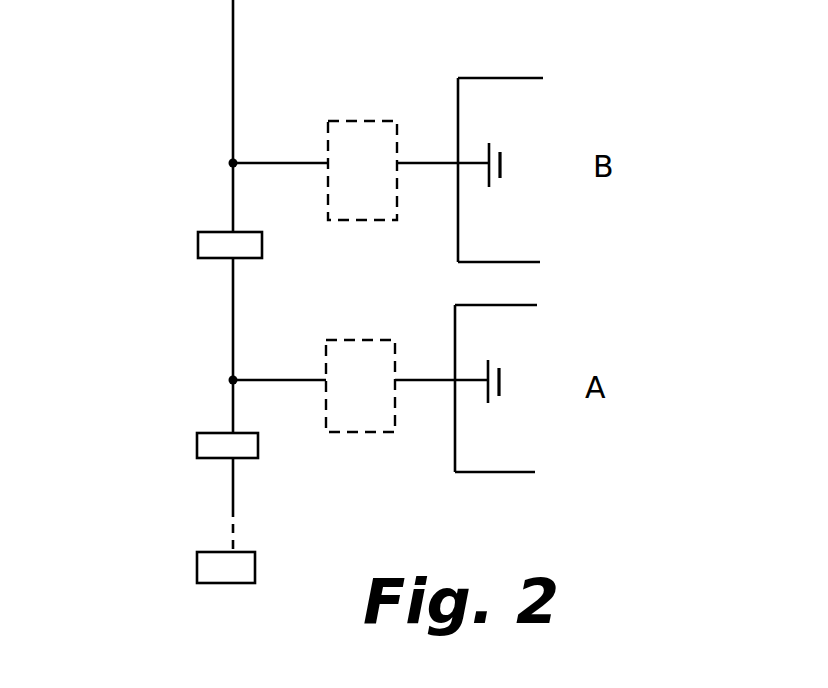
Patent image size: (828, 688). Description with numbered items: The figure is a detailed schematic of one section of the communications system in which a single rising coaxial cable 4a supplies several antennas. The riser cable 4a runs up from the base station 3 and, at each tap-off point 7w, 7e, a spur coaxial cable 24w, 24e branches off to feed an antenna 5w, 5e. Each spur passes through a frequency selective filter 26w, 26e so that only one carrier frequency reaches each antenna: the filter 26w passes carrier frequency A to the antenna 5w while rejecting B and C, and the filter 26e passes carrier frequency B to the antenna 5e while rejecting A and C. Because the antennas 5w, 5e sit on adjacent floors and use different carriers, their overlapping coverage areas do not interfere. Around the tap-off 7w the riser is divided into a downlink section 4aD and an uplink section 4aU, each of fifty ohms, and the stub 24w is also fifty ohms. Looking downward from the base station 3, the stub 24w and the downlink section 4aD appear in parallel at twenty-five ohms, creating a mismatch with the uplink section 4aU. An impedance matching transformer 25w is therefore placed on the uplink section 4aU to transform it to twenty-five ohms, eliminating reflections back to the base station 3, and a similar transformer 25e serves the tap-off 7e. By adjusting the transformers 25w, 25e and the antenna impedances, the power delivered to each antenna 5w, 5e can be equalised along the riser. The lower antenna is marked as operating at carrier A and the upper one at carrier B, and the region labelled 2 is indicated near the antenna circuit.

The substrate / transistor body region 2 is at (467, 478).
The base station 3 is at (226, 567).
The rising coaxial cable 4a is at (229, 61).
The coaxial riser cable section in the downlink direction 4aD is at (226, 333).
The coaxial riser cable section in the uplink direction 4aU is at (221, 483).
The antenna 5e is at (508, 161).
The antenna 5w is at (506, 369).
The tap-off point 7e is at (226, 165).
The tap-off point 7w is at (224, 381).
The spur coaxial cable 24e is at (273, 157).
The coaxial stub section 24w is at (263, 388).
The impedance matching transformer 25e is at (196, 243).
The impedance matching transformer 25w is at (195, 442).
The frequency selective filter 26e is at (363, 130).
The frequency selective filter 26w is at (352, 350).